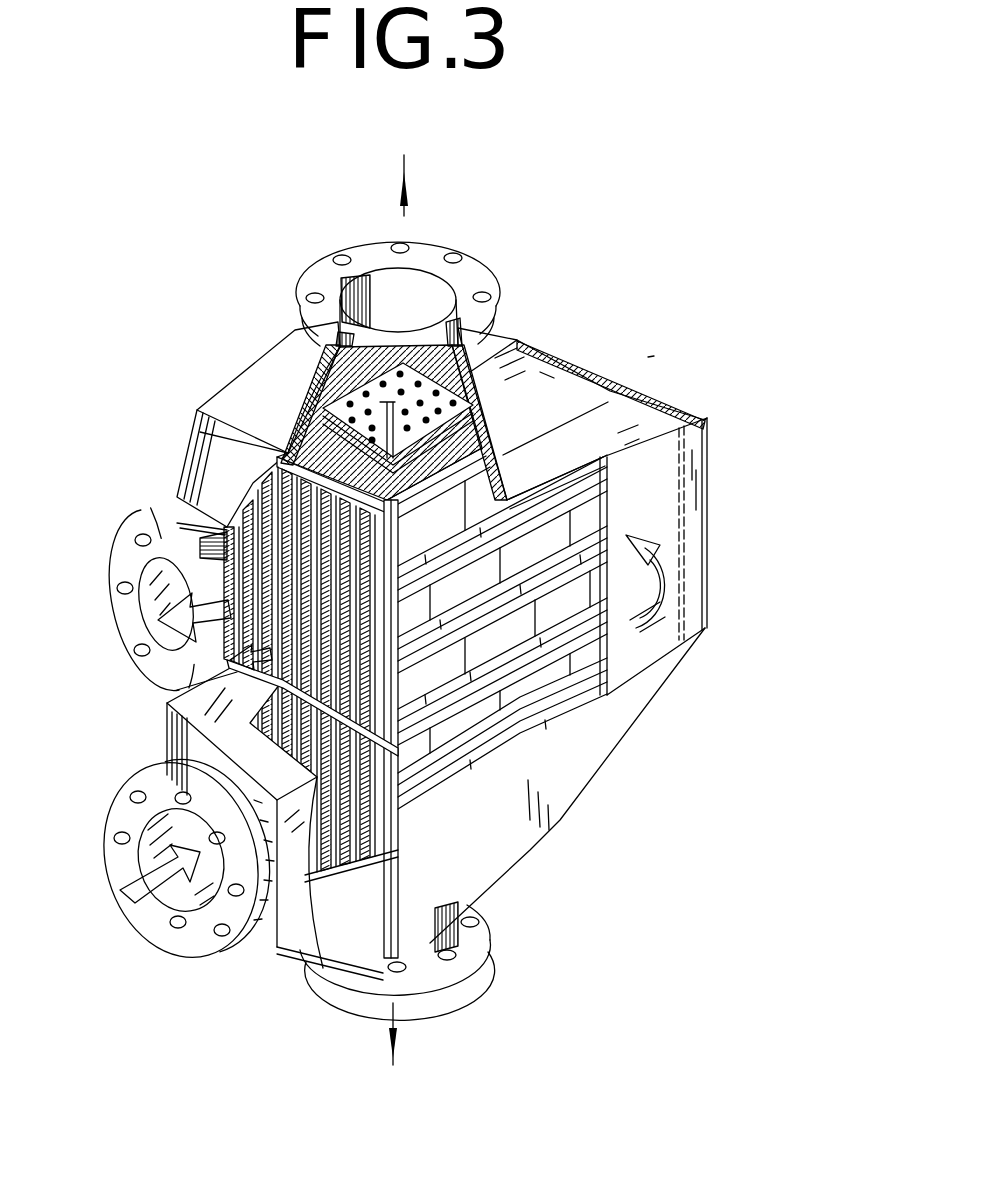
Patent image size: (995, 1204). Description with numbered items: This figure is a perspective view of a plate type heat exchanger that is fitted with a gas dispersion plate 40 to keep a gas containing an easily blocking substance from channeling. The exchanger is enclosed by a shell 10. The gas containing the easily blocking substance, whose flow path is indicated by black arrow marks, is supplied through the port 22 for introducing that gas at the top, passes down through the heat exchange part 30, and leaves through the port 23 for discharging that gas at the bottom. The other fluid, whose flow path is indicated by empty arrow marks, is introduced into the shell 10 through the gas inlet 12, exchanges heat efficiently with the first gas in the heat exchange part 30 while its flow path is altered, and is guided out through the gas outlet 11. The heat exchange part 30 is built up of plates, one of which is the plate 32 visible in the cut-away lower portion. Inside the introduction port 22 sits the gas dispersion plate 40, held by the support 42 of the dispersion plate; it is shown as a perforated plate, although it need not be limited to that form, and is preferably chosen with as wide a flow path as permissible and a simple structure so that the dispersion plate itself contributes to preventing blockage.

The shell 10 is at (615, 395).
The gas outlet 11 is at (147, 617).
The gas inlet 12 is at (165, 890).
The port for introducing a gas containing an easily blocking substance 22 is at (413, 287).
The port for discharging a gas containing the easily blocking substance 23 is at (462, 937).
The heat exchange part 30 is at (547, 667).
The plate 32 is at (343, 877).
The gas dispersion plate 40 is at (470, 385).
The support of the dispersion plate 42 is at (360, 312).